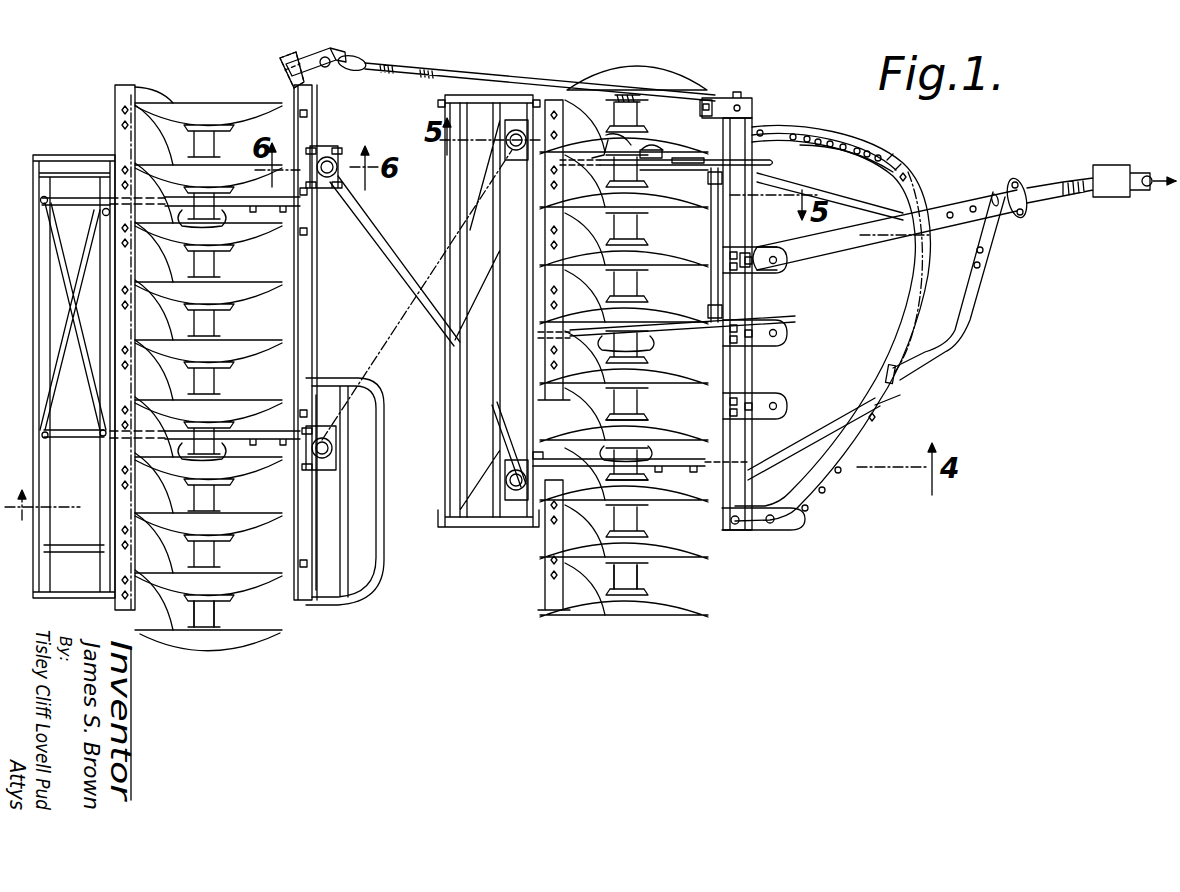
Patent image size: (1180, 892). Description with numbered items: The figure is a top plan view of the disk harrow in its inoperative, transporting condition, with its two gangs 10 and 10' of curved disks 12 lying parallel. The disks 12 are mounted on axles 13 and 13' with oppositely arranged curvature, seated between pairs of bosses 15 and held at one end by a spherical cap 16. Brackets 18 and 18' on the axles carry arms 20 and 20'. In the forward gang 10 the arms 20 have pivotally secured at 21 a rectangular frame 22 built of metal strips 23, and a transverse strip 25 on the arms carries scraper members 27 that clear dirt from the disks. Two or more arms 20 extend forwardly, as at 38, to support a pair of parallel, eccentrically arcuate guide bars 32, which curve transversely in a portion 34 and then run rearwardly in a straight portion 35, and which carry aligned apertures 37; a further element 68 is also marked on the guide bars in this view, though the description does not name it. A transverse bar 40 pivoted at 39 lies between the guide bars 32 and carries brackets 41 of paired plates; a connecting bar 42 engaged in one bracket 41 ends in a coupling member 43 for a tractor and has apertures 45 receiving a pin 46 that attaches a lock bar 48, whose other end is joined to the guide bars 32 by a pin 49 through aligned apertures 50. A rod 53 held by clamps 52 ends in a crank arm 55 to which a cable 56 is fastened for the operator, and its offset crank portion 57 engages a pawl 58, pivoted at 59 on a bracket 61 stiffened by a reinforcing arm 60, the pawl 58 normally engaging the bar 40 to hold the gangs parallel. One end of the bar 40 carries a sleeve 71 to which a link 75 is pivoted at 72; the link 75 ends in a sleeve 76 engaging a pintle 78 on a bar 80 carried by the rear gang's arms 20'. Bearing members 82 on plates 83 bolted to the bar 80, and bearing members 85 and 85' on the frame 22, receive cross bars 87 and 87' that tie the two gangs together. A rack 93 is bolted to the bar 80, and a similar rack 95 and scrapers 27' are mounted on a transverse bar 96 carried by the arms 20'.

The forward gang 10 is at (633, 376).
The rear gang 10' is at (219, 386).
The disk 12 is at (700, 545).
The axle 13 is at (653, 578).
The axle 13' is at (241, 615).
The boss 15 is at (645, 540).
The spherical cap 16 is at (633, 68).
The bracket 18 is at (647, 451).
The bracket 18' is at (226, 348).
The arm 20 is at (628, 383).
The arm 20' is at (223, 526).
The pivot 21 is at (560, 475).
The rectangular frame 22 is at (488, 530).
The metal strip 23 is at (452, 472).
The transverse strip 25 is at (550, 575).
The scraper member 27 is at (622, 374).
The scraper 27' is at (144, 378).
The guide bar 32 is at (882, 426).
The transverse curved portion 34 is at (900, 283).
The straight portion 35 is at (775, 530).
The aperture 37 is at (870, 152).
The forward extension 38 is at (820, 475).
The pivot 39 is at (740, 515).
The transverse bar 40 is at (752, 372).
The bracket 41 is at (787, 405).
The connecting bar 42 is at (935, 228).
The coupling member 43 is at (1108, 168).
The aperture 45 is at (973, 206).
The pin 46 is at (1003, 192).
The lock bar 48 is at (972, 316).
The pin 49 is at (897, 378).
The aligned apertures 50 is at (838, 478).
The clamp 52 is at (710, 308).
The rod 53 is at (710, 226).
The crank arm 55 is at (666, 341).
The cable 56 is at (785, 298).
The offset crank portion 57 is at (690, 172).
The pawl 58 is at (775, 145).
The pivot 59 is at (650, 150).
The reinforcing arm 60 is at (618, 150).
The bracket 61 is at (678, 155).
The pin 68 is at (905, 166).
The sleeve 71 is at (750, 100).
The pivot 72 is at (716, 98).
The link 75 is at (468, 76).
The sleeve 76 is at (312, 52).
The pintle 78 is at (285, 57).
The bar 80 is at (312, 322).
The bearing member 82 is at (318, 485).
The plate 83 is at (310, 415).
The bearing member 85 is at (494, 144).
The bearing member 85' is at (492, 480).
The cross bar 87 is at (428, 331).
The cross bar 87' is at (417, 295).
The rack 93 is at (360, 583).
The rack 95 is at (45, 590).
The transverse bar 96 is at (125, 143).